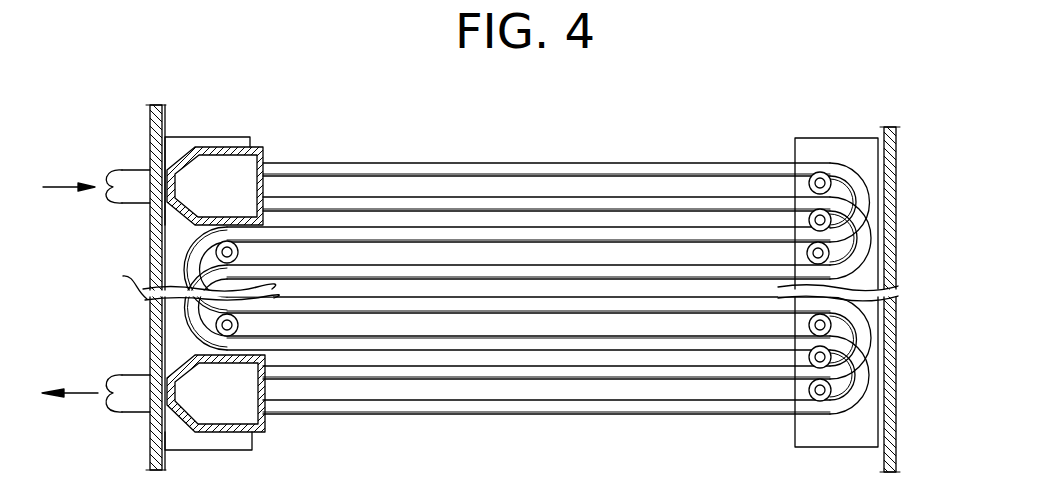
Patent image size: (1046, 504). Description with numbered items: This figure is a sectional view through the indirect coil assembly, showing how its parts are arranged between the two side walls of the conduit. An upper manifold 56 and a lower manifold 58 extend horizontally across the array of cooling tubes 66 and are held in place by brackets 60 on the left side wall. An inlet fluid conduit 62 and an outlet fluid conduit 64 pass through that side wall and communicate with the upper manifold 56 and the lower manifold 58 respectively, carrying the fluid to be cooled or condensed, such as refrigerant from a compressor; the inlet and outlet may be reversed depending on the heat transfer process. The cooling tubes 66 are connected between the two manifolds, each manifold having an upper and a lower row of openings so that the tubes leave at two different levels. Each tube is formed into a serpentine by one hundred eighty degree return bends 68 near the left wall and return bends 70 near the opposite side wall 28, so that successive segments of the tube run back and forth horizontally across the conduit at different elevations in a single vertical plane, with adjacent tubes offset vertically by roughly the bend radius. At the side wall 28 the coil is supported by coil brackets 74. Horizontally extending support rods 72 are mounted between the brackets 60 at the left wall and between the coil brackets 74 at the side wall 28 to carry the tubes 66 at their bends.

The side wall 28 is at (898, 153).
The upper manifold 56 is at (264, 149).
The lower manifold 58 is at (262, 432).
The brackets 60 is at (205, 148).
The inlet fluid conduit 62 is at (128, 178).
The outlet fluid conduit 64 is at (132, 382).
The cooling tubes 66 is at (381, 198).
The 180 degree return bends 68 is at (186, 259).
The 180 degree return bends 70 is at (868, 238).
The support rods 72 is at (807, 214).
The coil brackets 74 is at (835, 148).